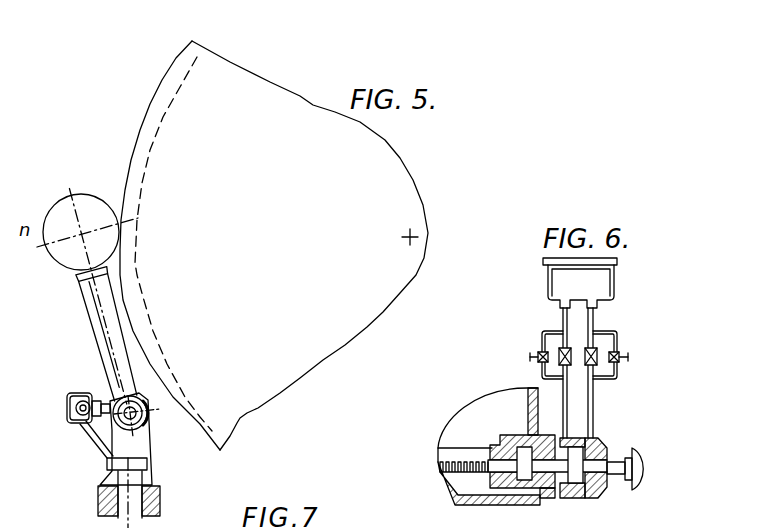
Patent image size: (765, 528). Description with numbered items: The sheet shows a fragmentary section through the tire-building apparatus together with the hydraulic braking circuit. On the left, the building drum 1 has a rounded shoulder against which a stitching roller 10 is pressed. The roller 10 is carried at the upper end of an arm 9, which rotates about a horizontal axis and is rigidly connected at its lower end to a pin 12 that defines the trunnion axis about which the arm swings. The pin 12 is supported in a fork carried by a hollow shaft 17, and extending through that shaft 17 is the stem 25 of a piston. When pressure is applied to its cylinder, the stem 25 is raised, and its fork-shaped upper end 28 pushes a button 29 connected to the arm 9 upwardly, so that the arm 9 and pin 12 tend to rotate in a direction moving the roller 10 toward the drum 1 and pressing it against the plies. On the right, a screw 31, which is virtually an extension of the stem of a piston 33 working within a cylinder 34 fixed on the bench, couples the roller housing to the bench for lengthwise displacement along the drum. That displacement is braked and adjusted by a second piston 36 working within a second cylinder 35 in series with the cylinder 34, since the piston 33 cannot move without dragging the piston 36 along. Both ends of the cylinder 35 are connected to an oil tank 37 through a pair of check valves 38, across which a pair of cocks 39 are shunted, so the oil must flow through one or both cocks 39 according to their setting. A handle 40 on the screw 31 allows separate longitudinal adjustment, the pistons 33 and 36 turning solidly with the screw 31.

In FIG. 5, the building drum 1 is at (150, 152).
In FIG. 5, the arm 9 is at (98, 309).
In FIG. 5, the stitching roller 10 is at (66, 209).
In FIG. 5, the pin 12 is at (143, 415).
In FIG. 5, the shaft 17 is at (108, 498).
In FIG. 5, the stem 25 is at (135, 498).
In FIG. 5, the upper end 28 is at (80, 423).
In FIG. 5, the button 29 is at (82, 402).
In FIG. 6, the screw 31 is at (465, 470).
In FIG. 6, the piston 33 is at (527, 481).
In FIG. 6, the cylinder 34 is at (513, 442).
In FIG. 6, the second cylinder 35 is at (594, 443).
In FIG. 6, the second piston 36 is at (577, 484).
In FIG. 6, the oil tank 37 is at (598, 277).
In FIG. 6, the check valve 38 is at (590, 350).
In FIG. 6, the cock 39 is at (538, 354).
In FIG. 6, the handle 40 is at (638, 478).